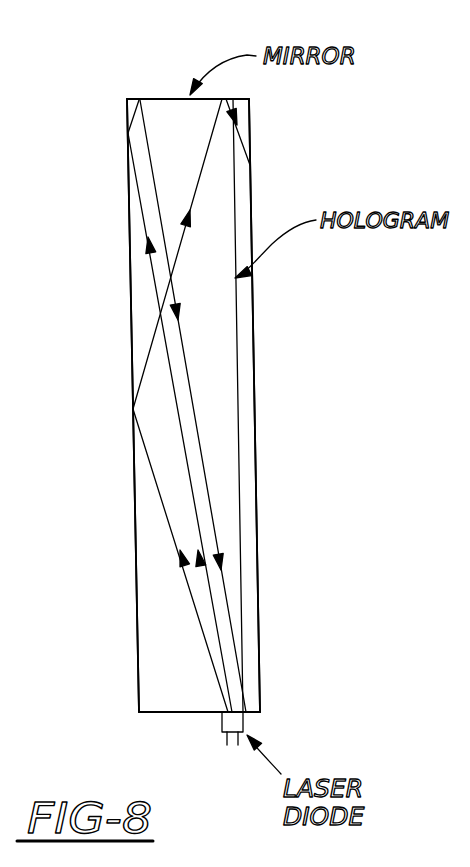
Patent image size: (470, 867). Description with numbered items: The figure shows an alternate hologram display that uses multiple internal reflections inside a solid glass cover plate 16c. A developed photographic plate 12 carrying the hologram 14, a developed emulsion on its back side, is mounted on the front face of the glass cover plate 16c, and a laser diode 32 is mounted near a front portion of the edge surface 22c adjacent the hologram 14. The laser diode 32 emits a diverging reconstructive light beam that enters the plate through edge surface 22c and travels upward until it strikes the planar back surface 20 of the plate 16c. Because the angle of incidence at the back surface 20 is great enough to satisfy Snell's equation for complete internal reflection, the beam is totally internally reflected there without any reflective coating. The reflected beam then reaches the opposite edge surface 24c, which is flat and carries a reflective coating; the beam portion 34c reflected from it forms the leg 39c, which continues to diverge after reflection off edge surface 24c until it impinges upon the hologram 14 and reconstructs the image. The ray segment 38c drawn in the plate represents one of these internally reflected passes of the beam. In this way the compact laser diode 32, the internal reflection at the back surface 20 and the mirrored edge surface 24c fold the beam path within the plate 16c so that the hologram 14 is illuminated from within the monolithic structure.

The glass cover plate 16c is at (167, 112).
The edge surface 24c is at (223, 98).
The leg of beam 39c is at (243, 150).
The reflected light beam 38c is at (186, 246).
The photographic plate 12 is at (252, 389).
The hologram 14 is at (241, 531).
The back surface 20 is at (133, 483).
The light beam from laser diode 34c is at (193, 598).
The edge surface 22c is at (157, 713).
The laser diode 32 is at (243, 718).